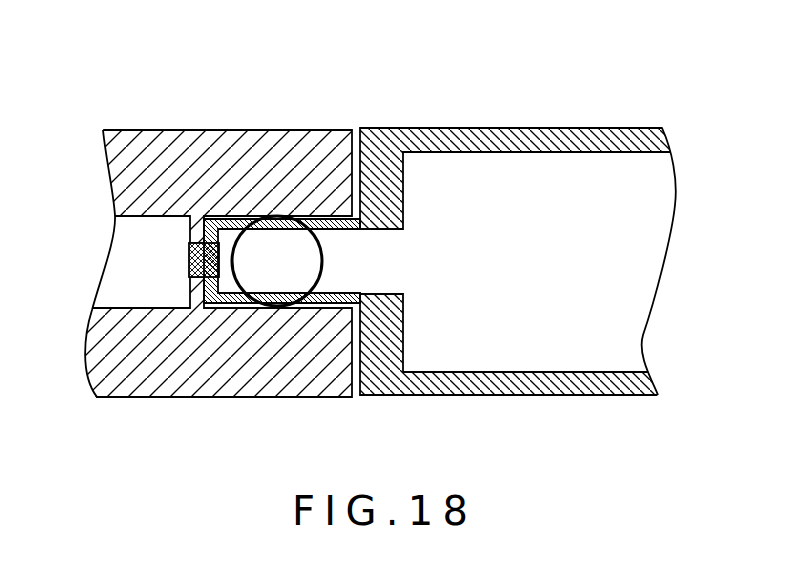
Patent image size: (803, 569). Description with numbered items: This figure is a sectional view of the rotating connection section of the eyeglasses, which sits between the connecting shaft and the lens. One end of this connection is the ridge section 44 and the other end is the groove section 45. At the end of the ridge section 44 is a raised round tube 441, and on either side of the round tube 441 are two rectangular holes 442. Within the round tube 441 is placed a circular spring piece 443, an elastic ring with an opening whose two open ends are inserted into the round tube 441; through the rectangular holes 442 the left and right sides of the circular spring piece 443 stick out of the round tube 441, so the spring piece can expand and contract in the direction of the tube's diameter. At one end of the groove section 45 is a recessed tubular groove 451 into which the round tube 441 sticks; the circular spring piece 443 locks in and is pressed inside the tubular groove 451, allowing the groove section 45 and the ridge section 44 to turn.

The ridge section 44 is at (525, 113).
The groove section 45 is at (231, 104).
The round tube 441 is at (327, 229).
The rectangular hole 442 is at (275, 225).
The circular spring piece 443 is at (317, 247).
The tubular groove 451 is at (238, 214).